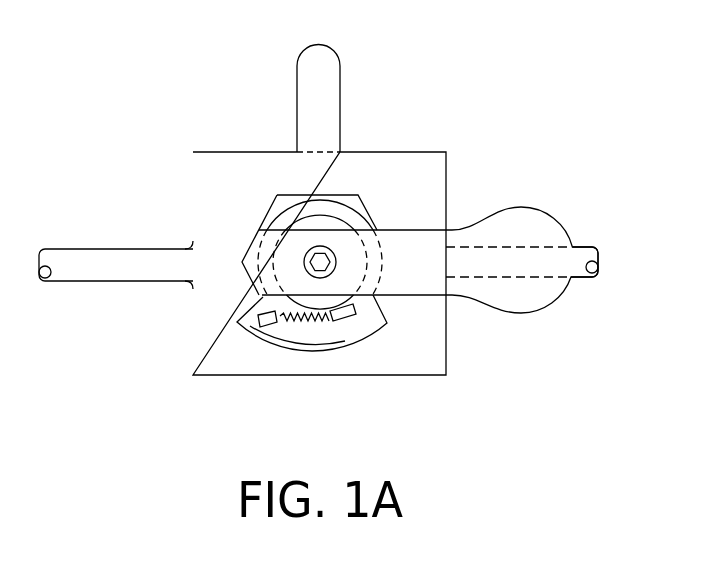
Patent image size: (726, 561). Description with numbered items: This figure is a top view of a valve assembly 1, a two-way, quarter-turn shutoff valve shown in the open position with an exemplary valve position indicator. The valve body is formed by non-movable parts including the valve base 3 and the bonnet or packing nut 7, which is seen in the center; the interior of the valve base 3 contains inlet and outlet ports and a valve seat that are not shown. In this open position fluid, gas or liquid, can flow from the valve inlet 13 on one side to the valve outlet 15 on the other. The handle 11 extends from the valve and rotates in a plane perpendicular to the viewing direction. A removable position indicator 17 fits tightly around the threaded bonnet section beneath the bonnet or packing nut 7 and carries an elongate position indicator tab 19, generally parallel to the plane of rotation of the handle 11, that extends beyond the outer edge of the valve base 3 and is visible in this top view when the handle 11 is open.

The valve assembly 1 is at (478, 84).
The valve base 3 is at (193, 333).
The bonnet or packing nut 7 is at (272, 207).
The handle 11 is at (537, 313).
The valve inlet 13 is at (100, 281).
The valve outlet 15 is at (580, 245).
The removable position indicator 17 is at (357, 335).
The position indicator tab 19 is at (312, 88).